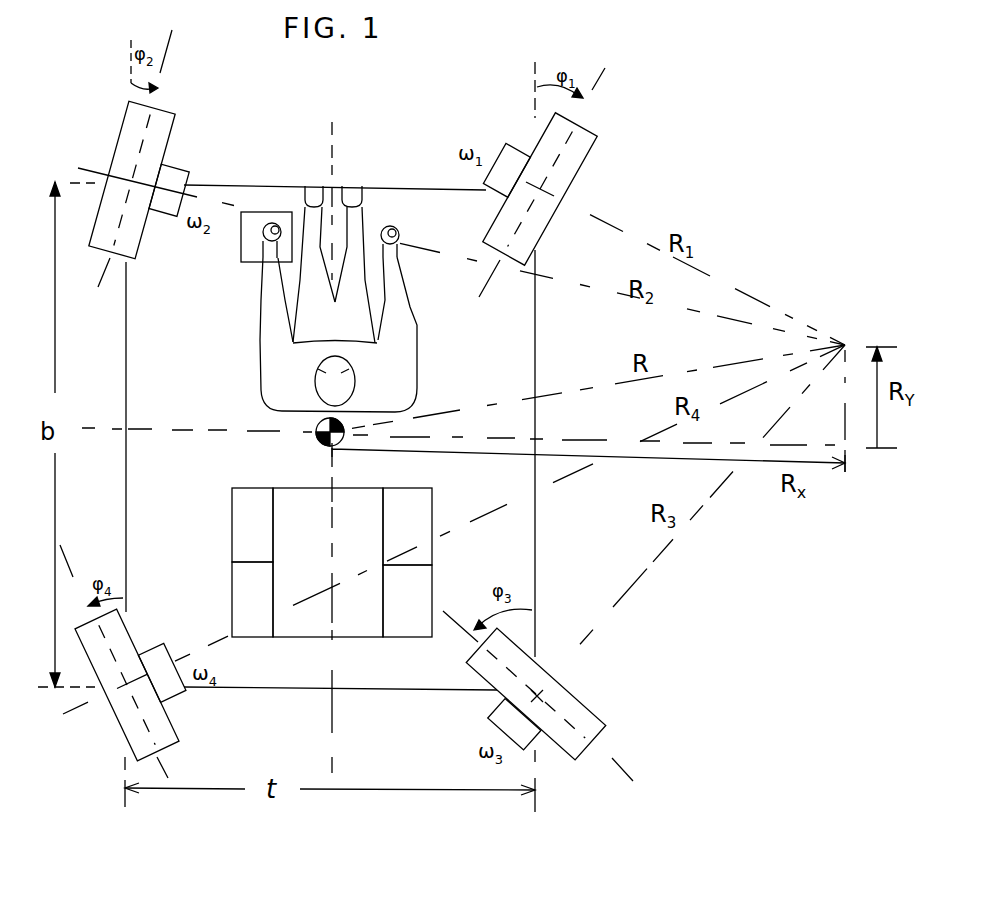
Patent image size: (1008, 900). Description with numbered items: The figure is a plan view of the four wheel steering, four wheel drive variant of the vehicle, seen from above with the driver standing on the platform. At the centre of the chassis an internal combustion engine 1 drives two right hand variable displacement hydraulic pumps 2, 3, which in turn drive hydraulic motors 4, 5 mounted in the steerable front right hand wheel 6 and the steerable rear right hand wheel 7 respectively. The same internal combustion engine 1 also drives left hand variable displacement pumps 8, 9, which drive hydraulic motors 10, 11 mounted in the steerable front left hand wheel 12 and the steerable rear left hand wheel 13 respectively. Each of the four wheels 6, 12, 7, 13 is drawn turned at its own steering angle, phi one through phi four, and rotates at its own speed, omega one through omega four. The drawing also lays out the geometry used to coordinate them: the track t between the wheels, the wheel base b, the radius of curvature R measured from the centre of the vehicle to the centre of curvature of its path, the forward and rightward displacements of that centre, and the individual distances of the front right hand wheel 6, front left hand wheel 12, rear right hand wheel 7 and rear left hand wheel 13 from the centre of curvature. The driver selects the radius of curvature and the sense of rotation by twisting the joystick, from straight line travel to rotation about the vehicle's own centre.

The internal combustion engine 1 is at (328, 562).
The right hand variable displacement hydraulic pump 2 is at (407, 526).
The right hand variable displacement hydraulic pump 3 is at (407, 601).
The hydraulic motor 4 is at (506, 170).
The hydraulic motor 5 is at (514, 724).
The front right hand wheel 6 is at (540, 189).
The rear right hand wheel 7 is at (536, 694).
The left hand variable displacement pump 8 is at (252, 525).
The left hand variable displacement pump 9 is at (252, 599).
The hydraulic motor 10 is at (169, 190).
The hydraulic motor 11 is at (162, 672).
The front left hand wheel 12 is at (132, 179).
The rear left hand wheel 13 is at (127, 685).